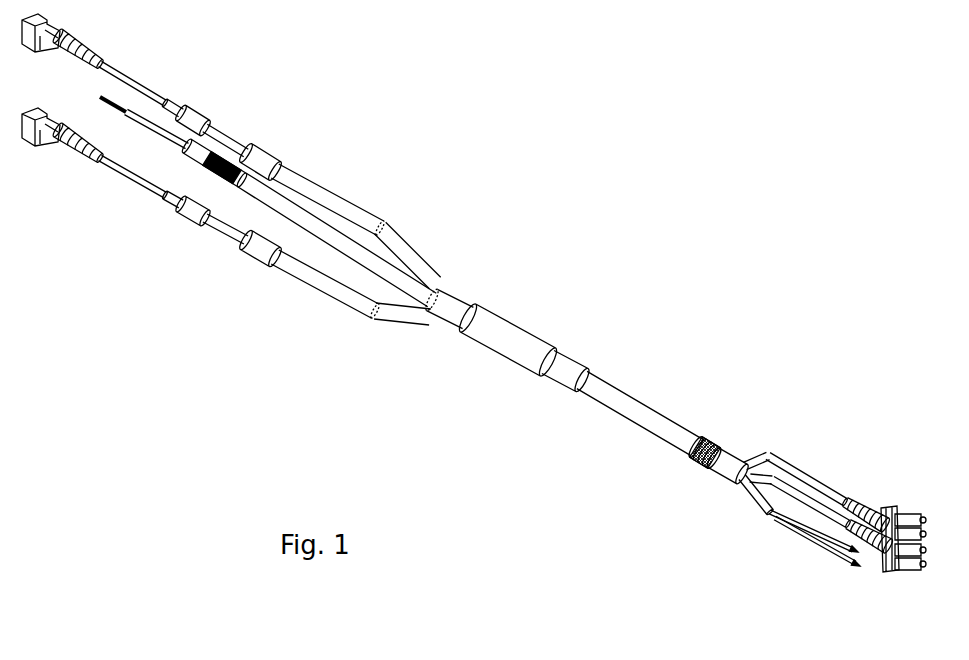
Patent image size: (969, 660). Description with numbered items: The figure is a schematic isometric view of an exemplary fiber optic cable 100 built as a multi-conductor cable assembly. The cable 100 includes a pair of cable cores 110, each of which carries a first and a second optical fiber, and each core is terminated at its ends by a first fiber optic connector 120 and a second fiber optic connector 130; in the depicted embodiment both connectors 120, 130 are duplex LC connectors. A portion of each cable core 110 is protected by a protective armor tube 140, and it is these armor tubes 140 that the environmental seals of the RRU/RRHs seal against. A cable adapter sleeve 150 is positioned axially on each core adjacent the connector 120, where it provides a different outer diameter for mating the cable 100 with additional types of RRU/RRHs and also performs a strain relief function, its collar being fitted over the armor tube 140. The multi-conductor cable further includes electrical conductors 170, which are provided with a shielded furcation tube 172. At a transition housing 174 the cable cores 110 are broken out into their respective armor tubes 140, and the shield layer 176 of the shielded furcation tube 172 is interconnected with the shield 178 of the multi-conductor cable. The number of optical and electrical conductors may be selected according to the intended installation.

The fiber optic cable 100 is at (637, 348).
The cable core 110 is at (154, 100).
The first fiber optic connector 120 is at (52, 31).
The second fiber optic connector 130 is at (907, 527).
The protective armor tube 140 is at (352, 213).
The cable adapter sleeve 150 is at (267, 162).
The electrical conductor 170 is at (100, 97).
The shielded furcation tube 172 is at (457, 288).
The transition housing 174 is at (518, 340).
The shield layer 176 is at (225, 157).
The shield 178 is at (705, 445).